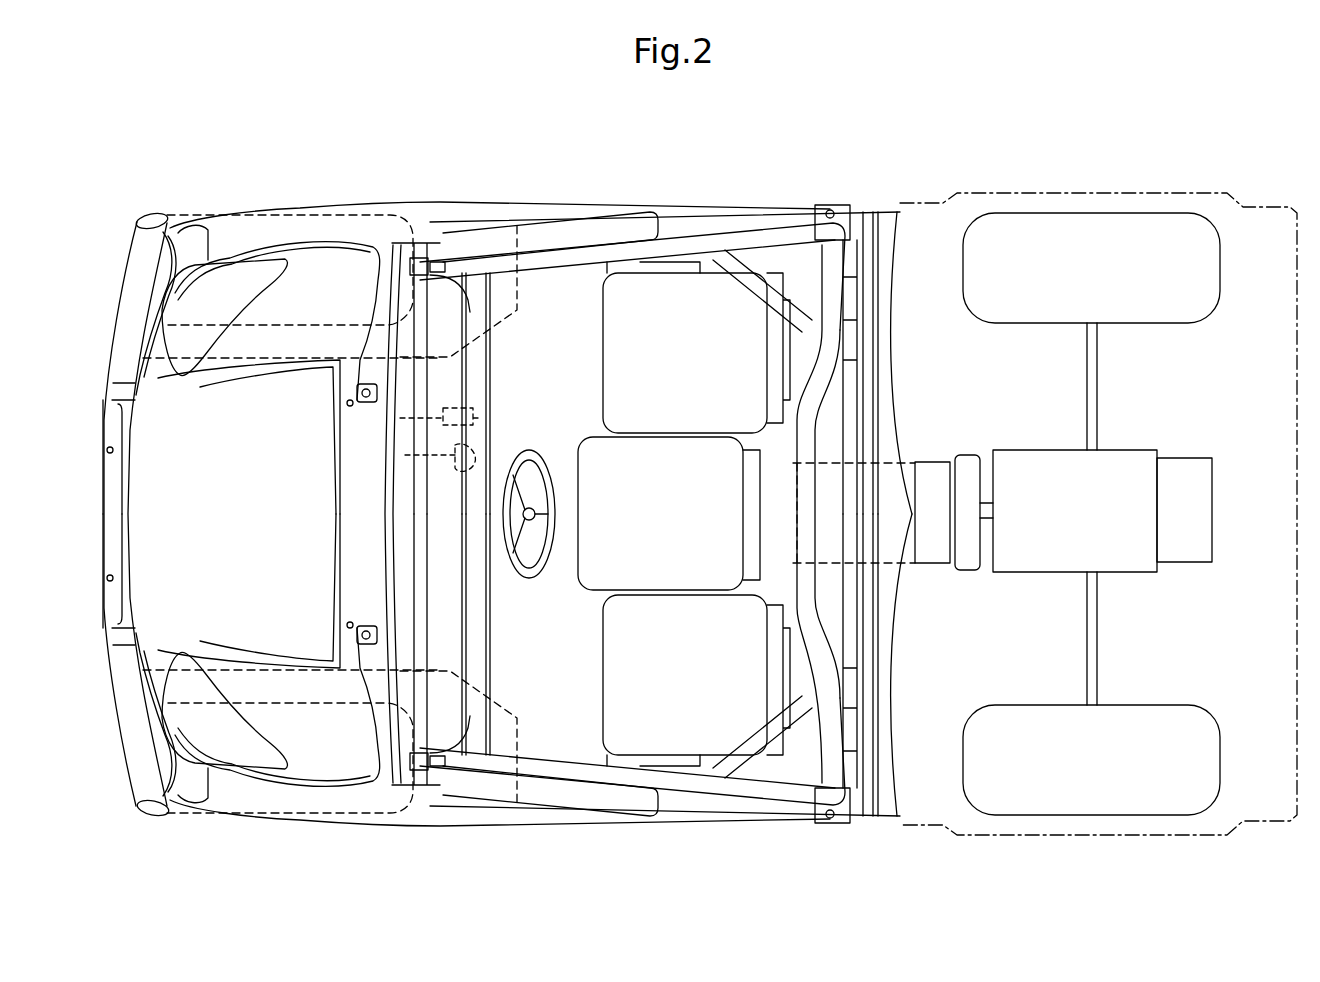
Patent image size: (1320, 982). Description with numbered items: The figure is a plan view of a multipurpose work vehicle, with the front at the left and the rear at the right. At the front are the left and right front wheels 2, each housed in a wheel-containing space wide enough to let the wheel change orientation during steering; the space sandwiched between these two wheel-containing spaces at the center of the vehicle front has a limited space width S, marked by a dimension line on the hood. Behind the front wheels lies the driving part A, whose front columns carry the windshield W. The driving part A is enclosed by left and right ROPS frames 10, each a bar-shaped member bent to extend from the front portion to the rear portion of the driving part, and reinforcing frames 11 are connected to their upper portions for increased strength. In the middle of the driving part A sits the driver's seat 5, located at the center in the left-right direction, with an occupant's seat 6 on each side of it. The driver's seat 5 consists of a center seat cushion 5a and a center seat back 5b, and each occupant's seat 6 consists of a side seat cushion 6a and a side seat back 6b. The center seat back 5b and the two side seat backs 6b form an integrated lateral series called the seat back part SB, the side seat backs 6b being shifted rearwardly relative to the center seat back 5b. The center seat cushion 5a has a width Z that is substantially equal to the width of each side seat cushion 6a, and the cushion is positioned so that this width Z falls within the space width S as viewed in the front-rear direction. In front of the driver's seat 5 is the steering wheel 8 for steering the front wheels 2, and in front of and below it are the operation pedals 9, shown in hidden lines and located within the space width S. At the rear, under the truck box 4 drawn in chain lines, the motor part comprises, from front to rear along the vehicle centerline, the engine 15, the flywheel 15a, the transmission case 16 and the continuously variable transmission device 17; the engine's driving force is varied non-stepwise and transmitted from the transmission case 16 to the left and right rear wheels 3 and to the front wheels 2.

The front wheel 2 is at (190, 215).
The rear wheel 3 is at (1030, 315).
The truck box 4 is at (935, 282).
The driver's seat 5 is at (574, 584).
The center seat cushion 5a is at (696, 535).
The center seat back 5b is at (754, 497).
The occupant's seat 6 is at (597, 368).
The side seat cushion 6a is at (692, 357).
The side seat back 6b is at (776, 385).
The steering wheel 8 is at (528, 457).
The operation pedals 9 is at (480, 440).
The ROPS frame 10 is at (598, 250).
The reinforcing frame 11 is at (827, 390).
The engine 15 is at (925, 460).
The flywheel 15a is at (960, 565).
The transmission case 16 is at (1048, 560).
The continuously variable transmission device 17 is at (1190, 470).
The driving part A is at (518, 172).
The seat back part SB is at (760, 362).
The windshield W is at (405, 475).
The space width S is at (265, 363).
The width Z is at (623, 441).